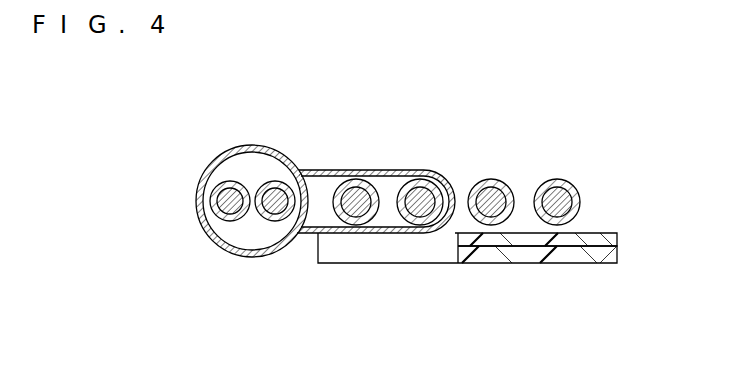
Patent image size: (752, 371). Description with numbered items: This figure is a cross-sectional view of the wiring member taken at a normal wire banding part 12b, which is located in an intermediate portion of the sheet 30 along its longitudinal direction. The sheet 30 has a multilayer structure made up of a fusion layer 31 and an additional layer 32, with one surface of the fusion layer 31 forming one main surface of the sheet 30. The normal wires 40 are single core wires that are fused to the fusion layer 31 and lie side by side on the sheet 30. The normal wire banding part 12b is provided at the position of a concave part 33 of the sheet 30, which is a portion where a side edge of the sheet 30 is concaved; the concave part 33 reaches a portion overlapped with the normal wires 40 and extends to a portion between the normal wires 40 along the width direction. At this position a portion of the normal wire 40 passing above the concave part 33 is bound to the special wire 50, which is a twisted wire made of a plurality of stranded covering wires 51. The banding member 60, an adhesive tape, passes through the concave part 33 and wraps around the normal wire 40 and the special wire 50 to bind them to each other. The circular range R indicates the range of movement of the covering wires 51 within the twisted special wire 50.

The normal wire banding part 12b is at (205, 113).
The banding member 60 is at (273, 152).
The special wire 50 is at (291, 308).
The covering wire 51 is at (230, 222).
The circular range R is at (308, 233).
The normal wire 40 is at (405, 184).
The concave part 33 is at (447, 263).
The sheet 30 is at (665, 214).
The fusion layer 31 is at (618, 237).
The additional layer 32 is at (618, 258).